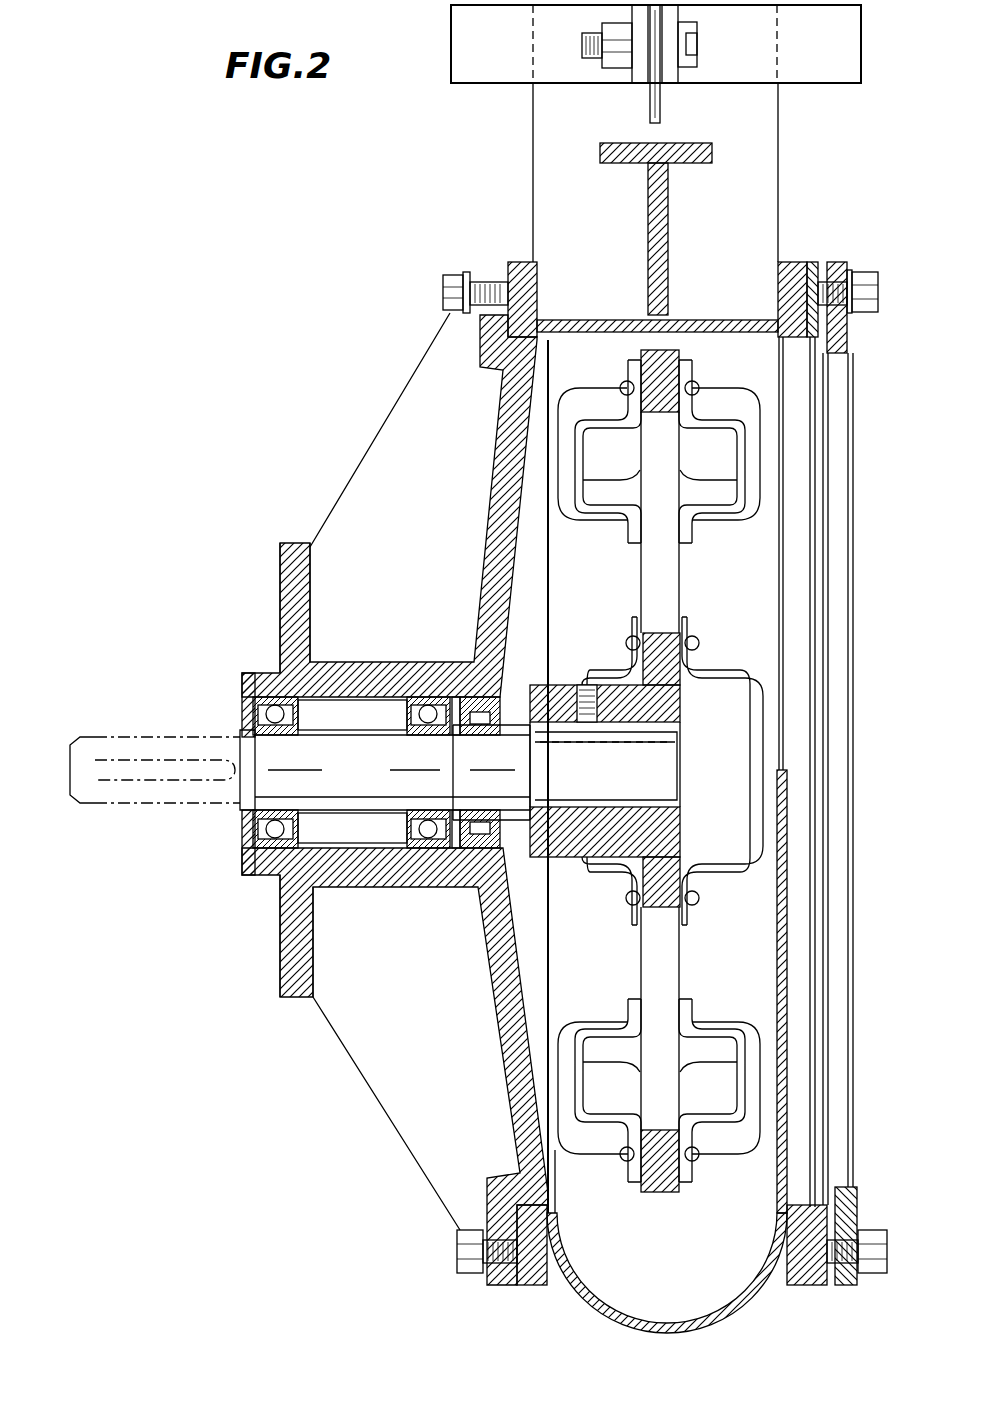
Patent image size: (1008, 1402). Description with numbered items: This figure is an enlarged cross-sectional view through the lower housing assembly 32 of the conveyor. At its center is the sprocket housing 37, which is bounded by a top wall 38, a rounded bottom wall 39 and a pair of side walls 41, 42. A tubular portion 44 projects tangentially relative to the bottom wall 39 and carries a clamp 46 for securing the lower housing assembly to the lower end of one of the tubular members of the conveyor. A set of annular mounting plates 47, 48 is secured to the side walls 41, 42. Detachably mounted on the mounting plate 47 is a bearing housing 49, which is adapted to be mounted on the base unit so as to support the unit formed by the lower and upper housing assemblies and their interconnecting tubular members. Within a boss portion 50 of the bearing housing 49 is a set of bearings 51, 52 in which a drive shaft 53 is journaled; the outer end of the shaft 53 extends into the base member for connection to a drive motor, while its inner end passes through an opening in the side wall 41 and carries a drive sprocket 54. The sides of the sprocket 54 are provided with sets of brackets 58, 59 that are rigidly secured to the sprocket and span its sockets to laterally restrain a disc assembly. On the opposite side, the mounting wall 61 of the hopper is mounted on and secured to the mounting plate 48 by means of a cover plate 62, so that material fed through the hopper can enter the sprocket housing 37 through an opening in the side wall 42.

The lower housing assembly 32 is at (326, 358).
The sprocket housing 37 is at (790, 962).
The top wall 38 is at (708, 318).
The rounded bottom wall 39 is at (745, 1308).
The side wall 41 is at (530, 1220).
The side wall 42 is at (787, 1052).
The tubular portion 44 is at (533, 172).
The clamp 46 is at (473, 85).
The annular mounting plate 47 is at (520, 262).
The annular mounting plate 48 is at (800, 262).
The bearing housing 49 is at (283, 945).
The boss portion 50 is at (388, 662).
The bearing 51 is at (258, 824).
The bearing 52 is at (406, 880).
The drive shaft 53 is at (374, 777).
The drive sprocket 54 is at (680, 605).
The bracket 58 is at (560, 460).
The bracket 59 is at (760, 468).
The mounting wall 61 is at (827, 1157).
The cover plate 62 is at (848, 345).